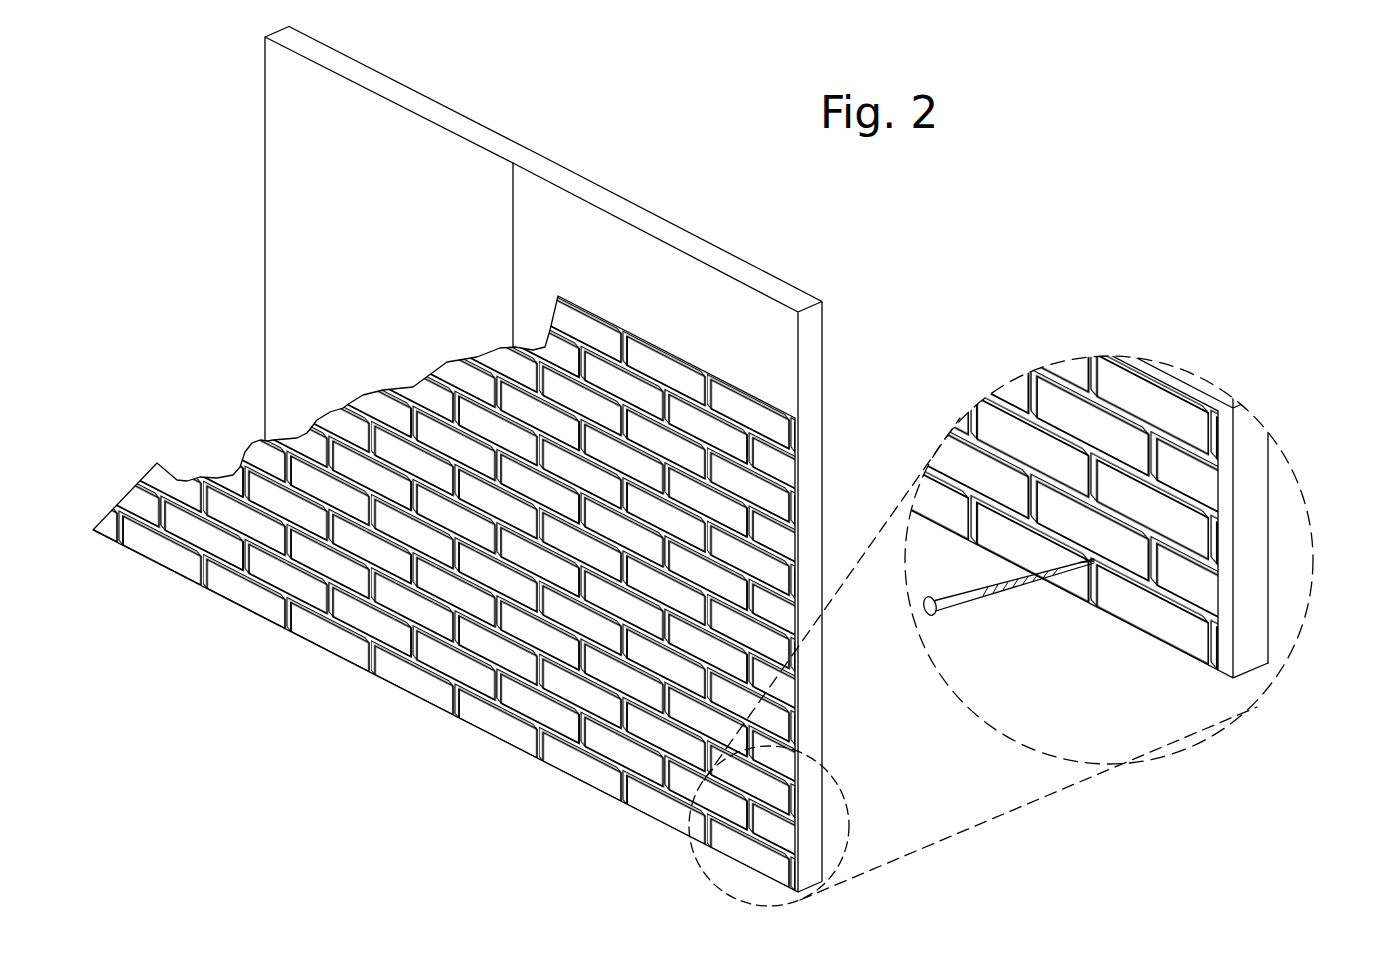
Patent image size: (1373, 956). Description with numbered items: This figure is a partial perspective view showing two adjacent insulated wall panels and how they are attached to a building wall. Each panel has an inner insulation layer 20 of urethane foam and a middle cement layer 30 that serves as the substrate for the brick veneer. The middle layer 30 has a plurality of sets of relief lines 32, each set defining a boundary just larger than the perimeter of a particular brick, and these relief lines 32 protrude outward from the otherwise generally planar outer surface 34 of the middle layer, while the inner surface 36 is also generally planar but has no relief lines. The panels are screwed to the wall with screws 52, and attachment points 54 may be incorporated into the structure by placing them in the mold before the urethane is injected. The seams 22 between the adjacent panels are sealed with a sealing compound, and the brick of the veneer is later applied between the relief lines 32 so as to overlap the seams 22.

The inner insulation layer 20 is at (293, 217).
The seams 22 is at (505, 213).
The middle cement layer 30 is at (1238, 660).
The relief lines 32 is at (302, 570).
The outer surface of the middle layer 34 is at (353, 575).
The inner surface of the middle layer 36 is at (1238, 487).
The screws 52 is at (990, 593).
The attachment points 54 is at (1095, 562).